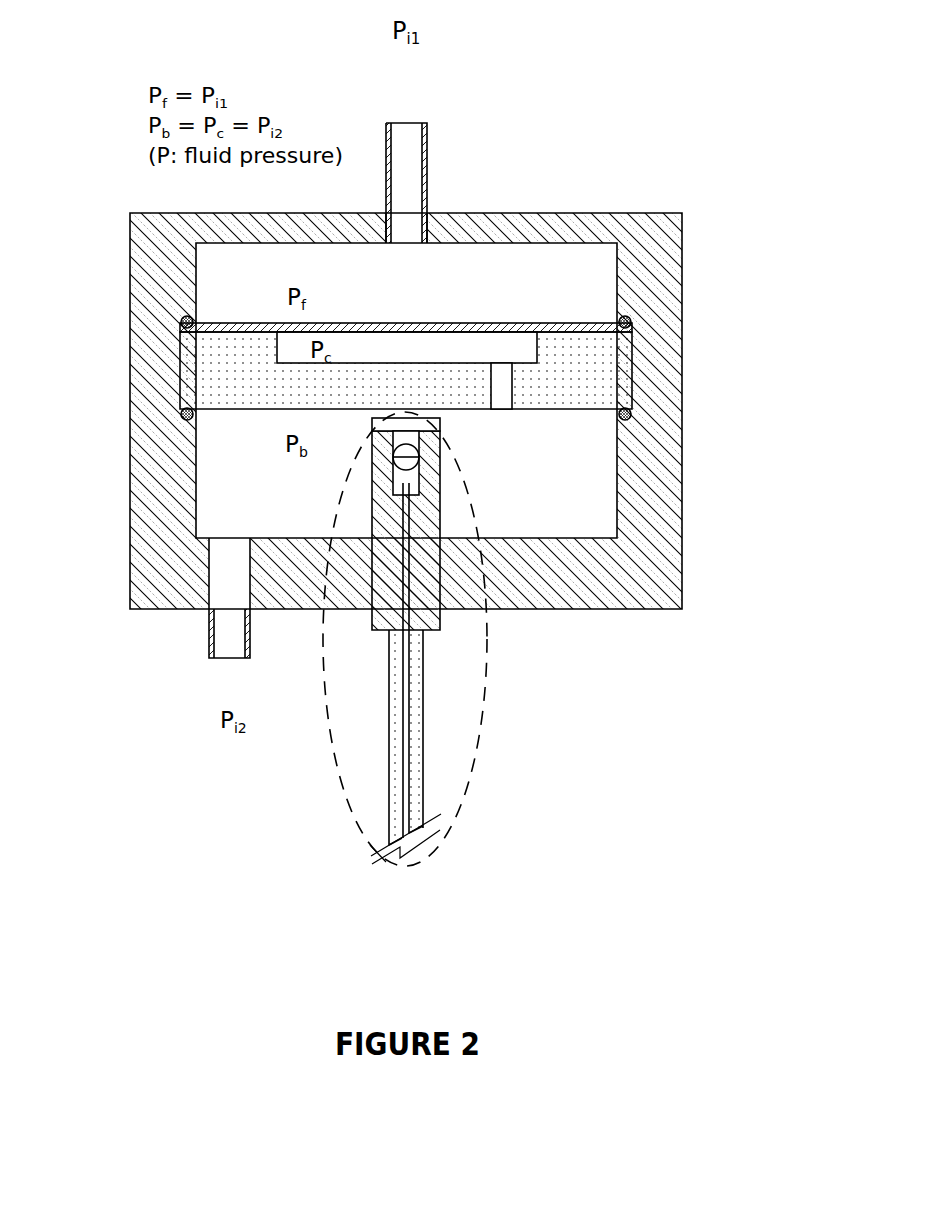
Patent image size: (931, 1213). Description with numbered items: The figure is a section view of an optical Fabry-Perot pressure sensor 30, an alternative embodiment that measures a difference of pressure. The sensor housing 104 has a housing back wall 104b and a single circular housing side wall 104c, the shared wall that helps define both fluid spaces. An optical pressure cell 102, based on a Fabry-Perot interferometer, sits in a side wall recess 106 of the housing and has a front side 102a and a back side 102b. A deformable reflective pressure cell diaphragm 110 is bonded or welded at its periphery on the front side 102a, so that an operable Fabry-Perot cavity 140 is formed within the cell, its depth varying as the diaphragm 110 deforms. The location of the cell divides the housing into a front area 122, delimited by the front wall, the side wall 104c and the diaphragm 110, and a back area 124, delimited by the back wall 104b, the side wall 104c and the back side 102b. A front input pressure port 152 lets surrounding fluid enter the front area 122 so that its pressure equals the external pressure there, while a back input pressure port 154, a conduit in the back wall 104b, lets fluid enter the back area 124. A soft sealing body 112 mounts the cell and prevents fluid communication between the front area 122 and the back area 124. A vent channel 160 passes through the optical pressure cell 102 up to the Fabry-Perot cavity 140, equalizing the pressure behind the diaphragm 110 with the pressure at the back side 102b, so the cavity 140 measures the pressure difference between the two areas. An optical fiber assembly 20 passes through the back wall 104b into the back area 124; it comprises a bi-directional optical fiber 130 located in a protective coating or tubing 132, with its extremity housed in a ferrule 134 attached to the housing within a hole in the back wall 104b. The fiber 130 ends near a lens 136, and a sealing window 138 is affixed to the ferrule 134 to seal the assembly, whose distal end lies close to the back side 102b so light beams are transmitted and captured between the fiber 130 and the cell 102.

The optical fiber assembly 20 is at (344, 798).
The optical Fabry-Perot pressure sensor 30 is at (705, 417).
The optical pressure cell 102 is at (625, 378).
The front side 102a is at (597, 278).
The back side 102b is at (508, 411).
The sensor housing 104 is at (665, 512).
The housing back wall 104b is at (280, 567).
The housing side wall 104c is at (160, 531).
The side wall recess 106 is at (640, 348).
The pressure cell diaphragm 110 is at (231, 319).
The soft sealing body 112 is at (182, 326).
The front area 122 is at (341, 264).
The back area 124 is at (232, 446).
The bi-directional optical fiber 130 is at (410, 742).
The protective coating or tubing 132 is at (425, 783).
The ferrule 134 is at (428, 604).
The lens 136 is at (392, 473).
The sealing window 138 is at (444, 420).
The Fabry-Perot cavity 140 is at (490, 346).
The front input pressure port 152 is at (413, 121).
The back input pressure port 154 is at (226, 661).
The vent channel 160 is at (566, 420).